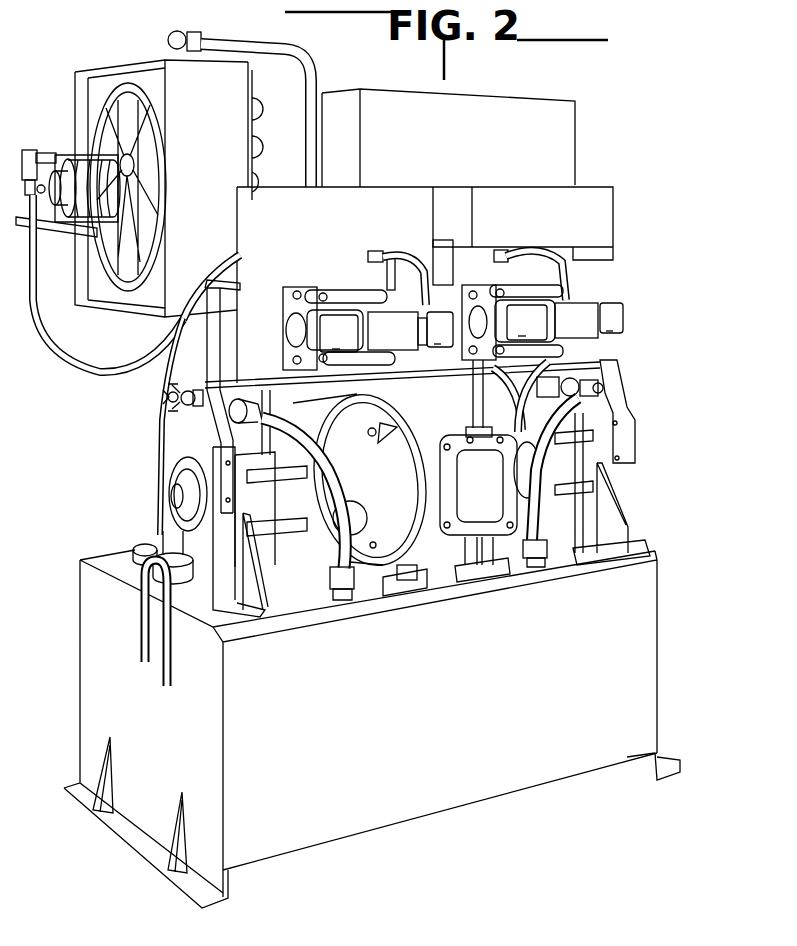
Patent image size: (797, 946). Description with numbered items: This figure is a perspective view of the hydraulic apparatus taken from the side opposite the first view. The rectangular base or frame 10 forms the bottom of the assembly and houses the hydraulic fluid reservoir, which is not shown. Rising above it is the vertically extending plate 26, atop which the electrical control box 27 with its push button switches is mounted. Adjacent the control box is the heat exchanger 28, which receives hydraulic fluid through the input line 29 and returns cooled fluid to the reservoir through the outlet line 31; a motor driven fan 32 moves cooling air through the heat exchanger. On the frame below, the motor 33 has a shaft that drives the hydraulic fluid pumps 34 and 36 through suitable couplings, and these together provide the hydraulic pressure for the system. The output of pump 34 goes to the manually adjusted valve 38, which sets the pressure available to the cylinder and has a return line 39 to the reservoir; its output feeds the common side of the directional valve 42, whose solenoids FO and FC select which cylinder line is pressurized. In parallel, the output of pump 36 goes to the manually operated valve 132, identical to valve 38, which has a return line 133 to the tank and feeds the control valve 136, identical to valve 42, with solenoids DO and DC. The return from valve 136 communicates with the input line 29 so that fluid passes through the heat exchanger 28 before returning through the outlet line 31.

The rectangular base or frame 10 is at (376, 832).
The vertically extending plate 26 is at (306, 245).
The electrical control box 27 is at (468, 150).
The heat exchanger 28 is at (211, 146).
The input line 29 is at (283, 45).
The outlet line 31 is at (170, 447).
The motor driven fan 32 is at (88, 162).
The motor 33 is at (363, 553).
The hydraulic fluid pump 34 is at (180, 463).
The hydraulic fluid pump 36 is at (547, 464).
The manually adjusted valve 38 is at (198, 420).
The return line 39 is at (317, 548).
The directional valve 42 is at (395, 345).
The manually operated valve 132 is at (578, 370).
The return line 133 is at (547, 547).
The control valve 136 is at (578, 335).